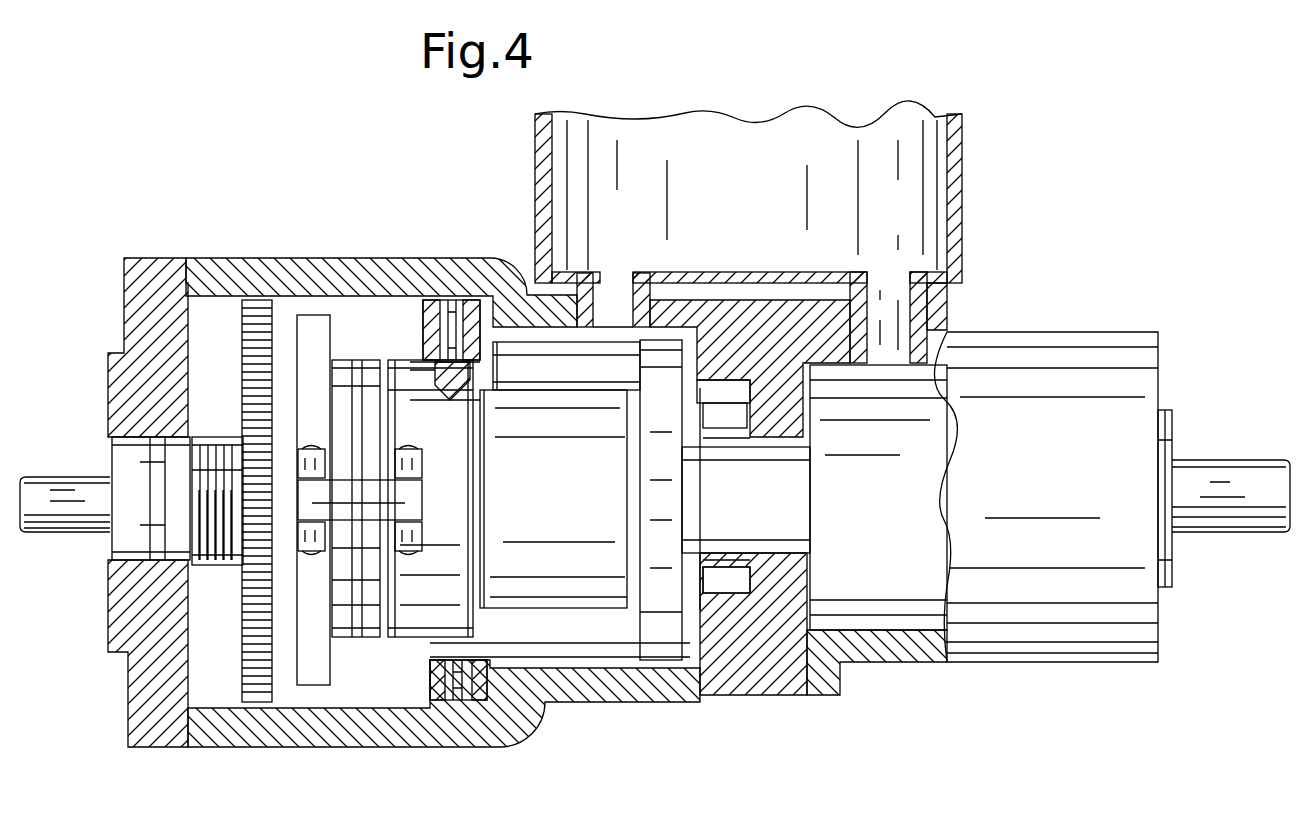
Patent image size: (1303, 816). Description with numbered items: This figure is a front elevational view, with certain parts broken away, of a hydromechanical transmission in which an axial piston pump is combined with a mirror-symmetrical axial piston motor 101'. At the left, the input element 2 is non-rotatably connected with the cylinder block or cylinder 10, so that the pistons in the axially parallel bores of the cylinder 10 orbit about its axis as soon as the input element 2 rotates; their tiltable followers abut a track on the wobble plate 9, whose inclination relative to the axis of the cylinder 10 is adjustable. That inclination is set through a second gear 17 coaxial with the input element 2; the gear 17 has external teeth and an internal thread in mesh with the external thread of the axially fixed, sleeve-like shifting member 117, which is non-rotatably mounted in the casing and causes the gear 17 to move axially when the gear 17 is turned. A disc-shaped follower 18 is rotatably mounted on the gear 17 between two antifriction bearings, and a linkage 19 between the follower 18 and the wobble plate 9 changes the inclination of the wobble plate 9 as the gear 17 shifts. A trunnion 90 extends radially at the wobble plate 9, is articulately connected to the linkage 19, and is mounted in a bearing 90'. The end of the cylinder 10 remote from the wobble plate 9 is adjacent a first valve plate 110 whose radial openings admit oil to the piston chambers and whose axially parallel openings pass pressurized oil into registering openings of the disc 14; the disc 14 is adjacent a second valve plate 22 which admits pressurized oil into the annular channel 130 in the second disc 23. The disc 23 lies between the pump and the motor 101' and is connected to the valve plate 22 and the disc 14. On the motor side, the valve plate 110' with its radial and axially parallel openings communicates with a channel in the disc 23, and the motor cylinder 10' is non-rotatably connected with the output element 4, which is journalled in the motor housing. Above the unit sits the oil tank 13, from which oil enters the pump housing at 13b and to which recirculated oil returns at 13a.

The input element 2 is at (35, 497).
The output element 4 is at (1240, 480).
The wobble plate 9 is at (410, 612).
The cylinder block 10 is at (560, 562).
The cylinder block of the motor 10' is at (878, 549).
The oil tank 13 is at (963, 232).
The oil return location 13a is at (882, 310).
The oil inlet location 13b is at (628, 376).
The disc 14 is at (675, 690).
The second gear 17 is at (262, 705).
The disc-shaped follower 18 is at (315, 665).
The linkage 19 is at (372, 490).
The second valve plate 22 is at (702, 618).
The second disc 23 is at (768, 322).
The trunnion 90 is at (451, 273).
The bearing 90' is at (458, 730).
The axial piston motor 101' is at (1053, 462).
The first valve plate 110 is at (652, 558).
The valve plate of the motor 110' is at (876, 704).
The shifting member 117 is at (215, 572).
The annular channel 130 is at (720, 380).